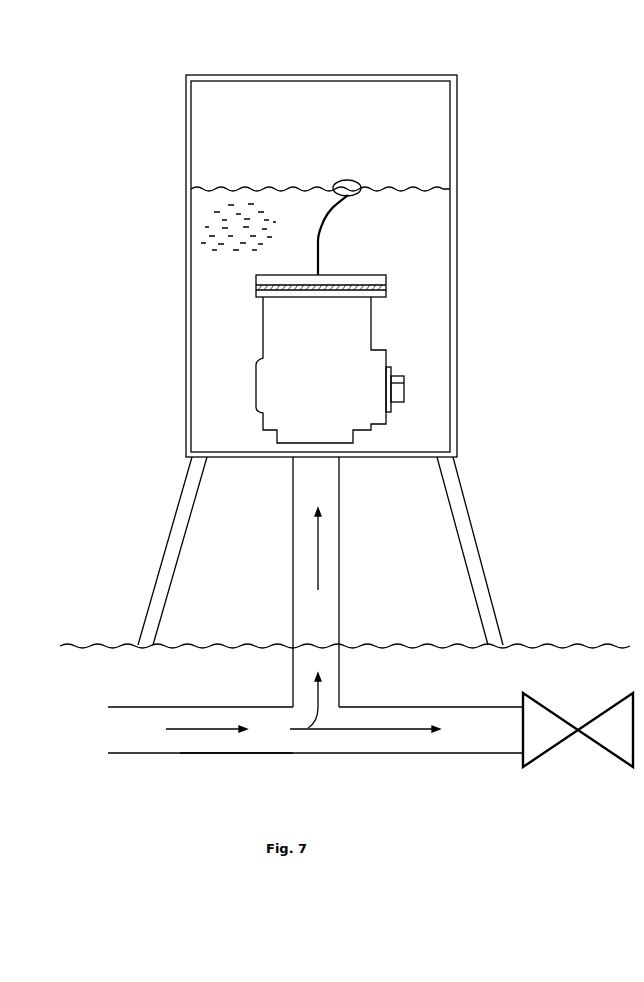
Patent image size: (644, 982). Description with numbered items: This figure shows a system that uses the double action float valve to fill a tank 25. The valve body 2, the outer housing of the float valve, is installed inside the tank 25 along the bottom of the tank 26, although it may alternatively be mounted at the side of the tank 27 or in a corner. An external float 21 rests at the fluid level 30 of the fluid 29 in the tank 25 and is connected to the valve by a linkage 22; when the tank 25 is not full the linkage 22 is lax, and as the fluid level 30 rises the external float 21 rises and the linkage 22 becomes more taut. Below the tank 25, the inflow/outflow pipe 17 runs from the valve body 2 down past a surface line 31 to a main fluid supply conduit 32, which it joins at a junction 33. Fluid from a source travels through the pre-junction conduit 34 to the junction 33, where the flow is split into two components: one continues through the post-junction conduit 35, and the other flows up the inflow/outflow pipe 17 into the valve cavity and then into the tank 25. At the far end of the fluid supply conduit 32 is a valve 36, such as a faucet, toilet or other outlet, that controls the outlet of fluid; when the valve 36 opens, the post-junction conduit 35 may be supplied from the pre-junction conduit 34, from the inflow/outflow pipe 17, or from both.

The valve body 2 is at (293, 322).
The inflow/outflow pipe 17 is at (292, 527).
The external float 21 is at (347, 178).
The linkage 22 is at (318, 241).
The tank 25 is at (457, 118).
The bottom of the tank 26 is at (417, 460).
The side of the tank 27 is at (450, 382).
The fluid 29 is at (213, 272).
The fluid level 30 is at (270, 188).
The ground surface 31 is at (115, 652).
The fluid supply conduit 32 is at (162, 753).
The junction 33 is at (320, 753).
The pre-junction conduit 34 is at (225, 753).
The post-junction conduit 35 is at (468, 753).
The valve 36 is at (597, 745).